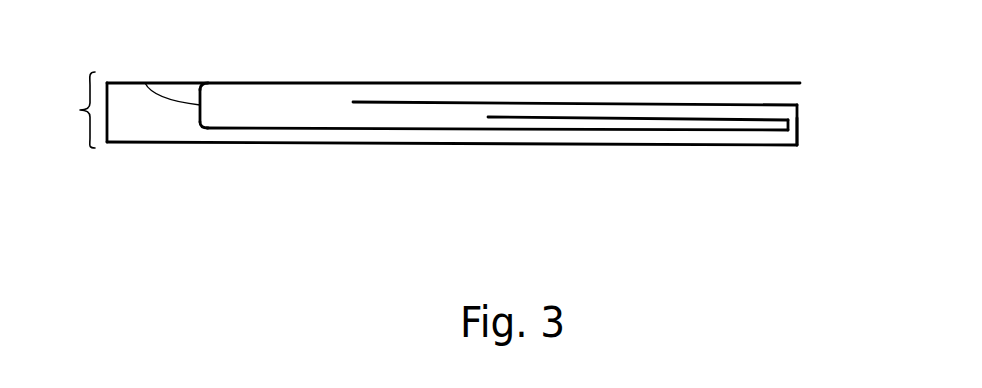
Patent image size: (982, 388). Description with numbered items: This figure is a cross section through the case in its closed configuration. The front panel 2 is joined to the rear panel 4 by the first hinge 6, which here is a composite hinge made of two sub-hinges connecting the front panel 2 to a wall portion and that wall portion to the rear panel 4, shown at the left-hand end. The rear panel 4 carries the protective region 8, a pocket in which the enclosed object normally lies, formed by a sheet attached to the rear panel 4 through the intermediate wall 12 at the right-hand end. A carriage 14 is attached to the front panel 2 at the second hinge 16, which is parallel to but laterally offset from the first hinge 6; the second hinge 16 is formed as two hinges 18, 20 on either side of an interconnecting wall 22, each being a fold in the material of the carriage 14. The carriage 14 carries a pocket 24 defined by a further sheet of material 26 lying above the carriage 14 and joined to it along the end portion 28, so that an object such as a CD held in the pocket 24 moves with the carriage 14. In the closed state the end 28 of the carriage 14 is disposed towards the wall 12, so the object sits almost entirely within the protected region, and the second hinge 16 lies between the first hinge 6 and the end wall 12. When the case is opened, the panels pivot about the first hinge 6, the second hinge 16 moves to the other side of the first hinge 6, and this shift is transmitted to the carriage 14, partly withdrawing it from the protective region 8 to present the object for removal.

The front panel 2 is at (333, 82).
The rear panel 4 is at (433, 145).
The first hinge 6 is at (80, 110).
The protective region 8 is at (777, 104).
The intermediate wall 12 is at (797, 120).
The carriage 14 is at (325, 131).
The second hinge 16 is at (203, 123).
The hinge 18 is at (198, 127).
The hinge 20 is at (201, 93).
The interconnecting wall 22 is at (145, 82).
The pocket 24 is at (557, 124).
The further sheet of material 26 is at (618, 117).
The end portion 28 is at (788, 121).